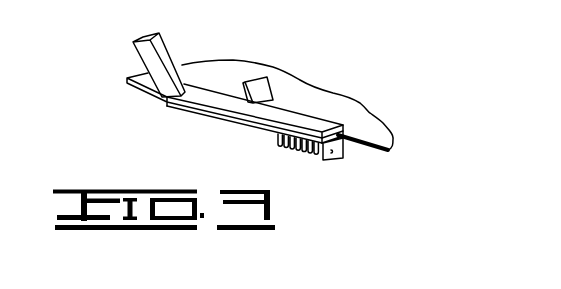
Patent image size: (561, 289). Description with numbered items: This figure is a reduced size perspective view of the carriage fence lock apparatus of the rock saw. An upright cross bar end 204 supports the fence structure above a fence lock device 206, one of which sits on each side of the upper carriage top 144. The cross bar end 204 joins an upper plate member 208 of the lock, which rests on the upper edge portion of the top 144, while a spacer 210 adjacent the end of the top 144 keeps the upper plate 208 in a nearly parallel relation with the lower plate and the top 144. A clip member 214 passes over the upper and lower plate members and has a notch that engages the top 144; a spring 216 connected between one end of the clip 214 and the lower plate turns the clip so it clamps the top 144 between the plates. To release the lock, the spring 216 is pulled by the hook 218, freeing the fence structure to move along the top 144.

The upper carriage top 144 is at (238, 62).
The upright cross bar end 204 is at (141, 50).
The fence lock device 206 is at (168, 115).
The upper plate member 208 is at (312, 120).
The spacer 210 is at (344, 133).
The clip member 214 is at (264, 89).
The spring 216 is at (304, 157).
The hook 218 is at (217, 140).